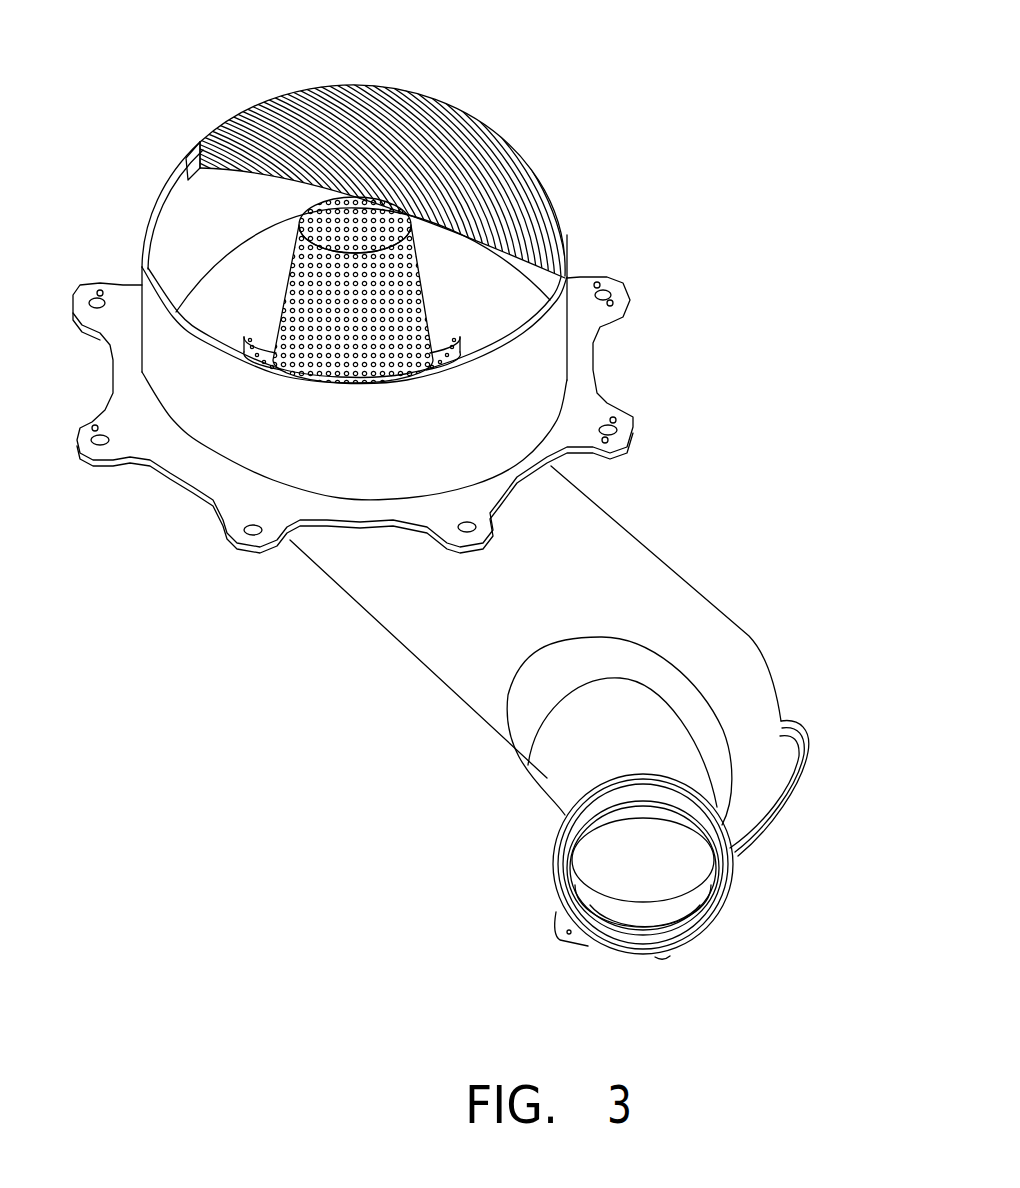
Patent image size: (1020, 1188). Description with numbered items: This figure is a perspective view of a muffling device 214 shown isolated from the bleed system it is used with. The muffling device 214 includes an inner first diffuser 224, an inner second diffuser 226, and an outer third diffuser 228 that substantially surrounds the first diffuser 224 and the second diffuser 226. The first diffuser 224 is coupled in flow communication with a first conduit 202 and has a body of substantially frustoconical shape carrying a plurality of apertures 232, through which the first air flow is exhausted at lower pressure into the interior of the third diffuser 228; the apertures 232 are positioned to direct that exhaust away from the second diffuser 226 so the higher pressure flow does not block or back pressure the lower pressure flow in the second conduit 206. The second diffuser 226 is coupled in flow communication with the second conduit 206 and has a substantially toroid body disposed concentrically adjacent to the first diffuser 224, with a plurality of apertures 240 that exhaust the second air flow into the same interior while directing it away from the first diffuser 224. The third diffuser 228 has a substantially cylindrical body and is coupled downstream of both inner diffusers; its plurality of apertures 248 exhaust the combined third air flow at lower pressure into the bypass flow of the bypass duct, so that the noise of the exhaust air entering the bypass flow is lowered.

The muffling device 214 is at (575, 55).
The first conduit 202 is at (580, 742).
The second conduit 206 is at (652, 582).
The first diffuser 224 is at (312, 232).
The second diffuser 226 is at (250, 343).
The third diffuser 228 is at (527, 372).
The apertures 232 is at (322, 191).
The apertures 240 is at (272, 338).
The apertures 248 is at (538, 214).